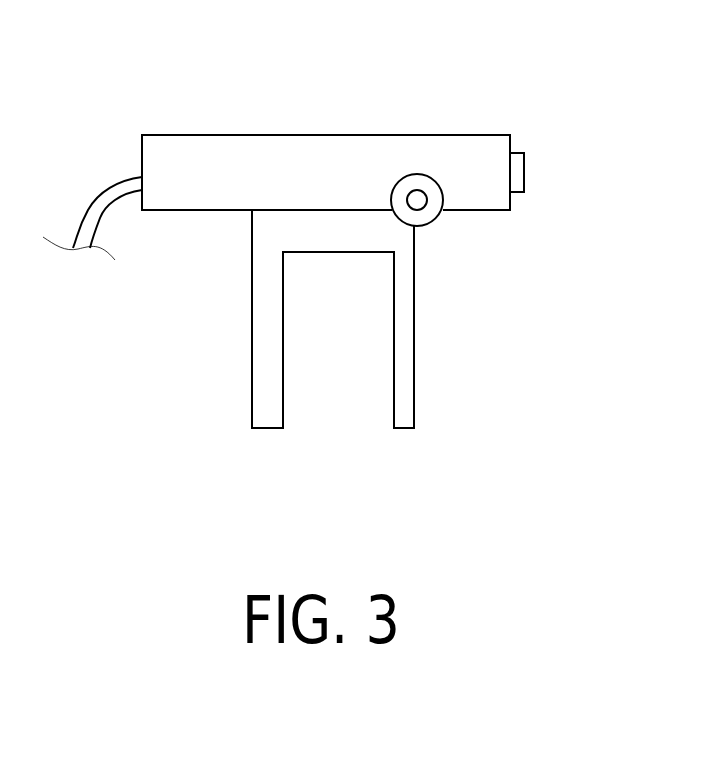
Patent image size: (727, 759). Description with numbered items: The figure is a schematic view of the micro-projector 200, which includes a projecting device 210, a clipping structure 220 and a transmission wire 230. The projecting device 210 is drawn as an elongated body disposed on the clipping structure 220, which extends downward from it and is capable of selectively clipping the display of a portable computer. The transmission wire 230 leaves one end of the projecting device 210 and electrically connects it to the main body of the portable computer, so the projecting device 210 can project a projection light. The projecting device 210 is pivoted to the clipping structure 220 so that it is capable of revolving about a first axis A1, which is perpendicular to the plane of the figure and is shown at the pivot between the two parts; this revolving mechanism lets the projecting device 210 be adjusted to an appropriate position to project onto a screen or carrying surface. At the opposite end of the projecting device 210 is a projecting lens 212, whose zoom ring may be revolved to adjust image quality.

The micro-projector 200 is at (589, 469).
The projecting device 210 is at (452, 148).
The projecting lens 212 is at (518, 173).
The clipping structure 220 is at (282, 227).
The transmission wire 230 is at (110, 190).
The first axis A1 is at (417, 200).